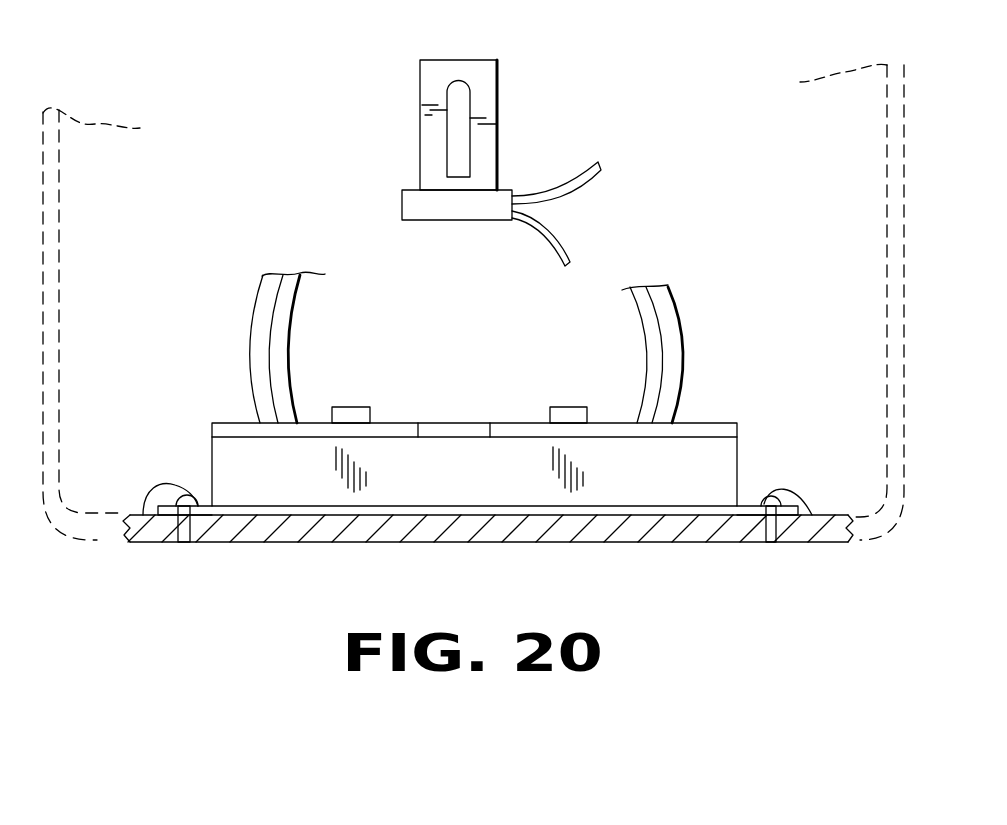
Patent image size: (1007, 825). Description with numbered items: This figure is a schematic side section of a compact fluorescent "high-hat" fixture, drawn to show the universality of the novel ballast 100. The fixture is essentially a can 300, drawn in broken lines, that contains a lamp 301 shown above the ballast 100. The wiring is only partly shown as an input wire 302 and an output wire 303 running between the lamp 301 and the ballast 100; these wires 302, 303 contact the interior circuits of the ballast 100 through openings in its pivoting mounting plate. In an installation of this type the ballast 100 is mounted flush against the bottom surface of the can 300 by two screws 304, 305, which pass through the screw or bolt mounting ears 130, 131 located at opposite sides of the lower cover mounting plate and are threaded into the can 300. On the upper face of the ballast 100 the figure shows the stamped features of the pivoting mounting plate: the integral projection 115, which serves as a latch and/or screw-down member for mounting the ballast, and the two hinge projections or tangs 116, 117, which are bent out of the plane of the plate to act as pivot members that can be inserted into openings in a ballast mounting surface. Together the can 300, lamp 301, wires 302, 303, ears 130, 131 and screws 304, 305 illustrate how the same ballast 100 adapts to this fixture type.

The ballast 100 is at (245, 445).
The integral projection 115 is at (455, 423).
The hinge projection or tang 116 is at (356, 416).
The hinge projection or tang 117 is at (560, 416).
The screw or bolt mounting ear 130 is at (750, 505).
The screw or bolt mounting ear 131 is at (205, 500).
The can 300 is at (887, 277).
The lamp 301 is at (498, 97).
The input wire 302 is at (258, 302).
The output wire 303 is at (672, 332).
The screw 304 is at (143, 515).
The screw 305 is at (812, 515).